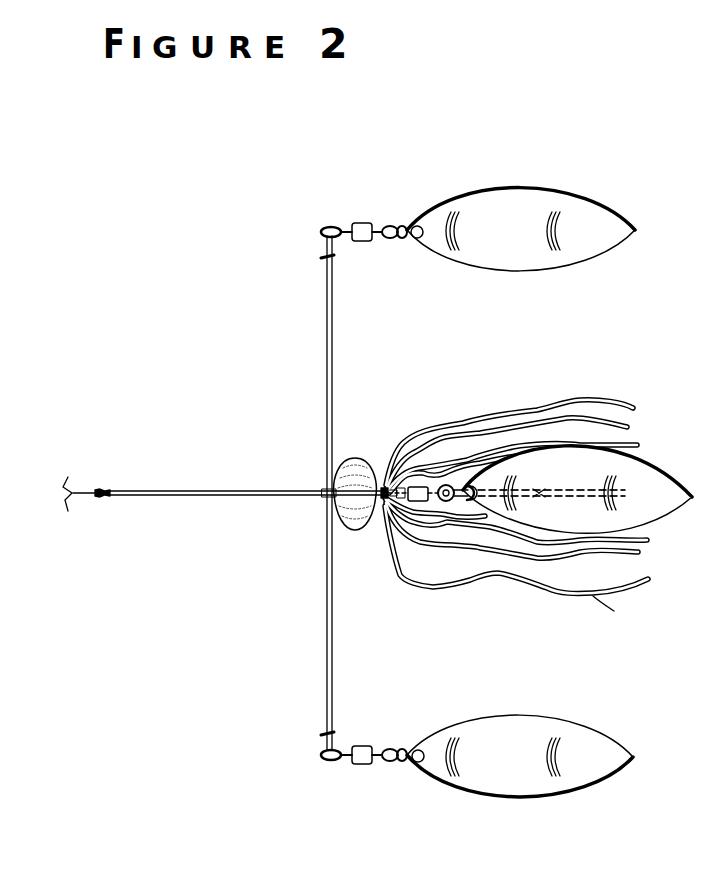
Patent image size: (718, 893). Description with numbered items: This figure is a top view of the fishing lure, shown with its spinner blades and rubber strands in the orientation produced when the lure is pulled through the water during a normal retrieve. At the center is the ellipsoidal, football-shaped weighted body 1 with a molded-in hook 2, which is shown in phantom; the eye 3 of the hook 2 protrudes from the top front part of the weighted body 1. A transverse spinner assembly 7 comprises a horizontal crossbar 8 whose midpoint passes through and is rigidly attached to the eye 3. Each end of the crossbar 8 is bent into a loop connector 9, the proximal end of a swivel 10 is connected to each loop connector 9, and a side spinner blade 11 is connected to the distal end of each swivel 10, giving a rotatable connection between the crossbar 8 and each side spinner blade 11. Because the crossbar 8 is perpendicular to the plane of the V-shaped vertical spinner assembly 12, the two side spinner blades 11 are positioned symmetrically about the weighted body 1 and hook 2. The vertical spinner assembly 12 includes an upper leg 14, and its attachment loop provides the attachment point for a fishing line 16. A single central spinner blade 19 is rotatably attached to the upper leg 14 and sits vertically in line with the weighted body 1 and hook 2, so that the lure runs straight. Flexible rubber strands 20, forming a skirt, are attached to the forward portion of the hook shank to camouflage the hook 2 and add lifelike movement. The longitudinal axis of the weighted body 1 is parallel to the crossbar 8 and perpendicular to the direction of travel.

The weighted body 1 is at (360, 532).
The hook 2 is at (585, 497).
The eye 3 is at (325, 489).
The transverse spinner assembly 7 is at (261, 493).
The horizontal crossbar 8 is at (330, 410).
The loop connector 9 is at (320, 232).
The swivel 10 is at (362, 241).
The side spinner blade 11 is at (520, 262).
The V-shaped vertical spinner assembly 12 is at (245, 484).
The upper leg 14 is at (175, 491).
The fishing line 16 is at (78, 495).
The central spinner blade 19 is at (657, 482).
The flexible rubber strands 20 is at (611, 553).